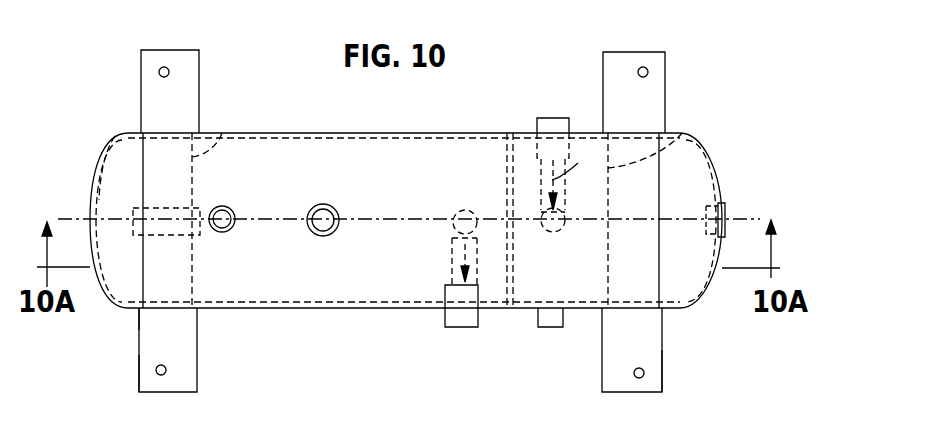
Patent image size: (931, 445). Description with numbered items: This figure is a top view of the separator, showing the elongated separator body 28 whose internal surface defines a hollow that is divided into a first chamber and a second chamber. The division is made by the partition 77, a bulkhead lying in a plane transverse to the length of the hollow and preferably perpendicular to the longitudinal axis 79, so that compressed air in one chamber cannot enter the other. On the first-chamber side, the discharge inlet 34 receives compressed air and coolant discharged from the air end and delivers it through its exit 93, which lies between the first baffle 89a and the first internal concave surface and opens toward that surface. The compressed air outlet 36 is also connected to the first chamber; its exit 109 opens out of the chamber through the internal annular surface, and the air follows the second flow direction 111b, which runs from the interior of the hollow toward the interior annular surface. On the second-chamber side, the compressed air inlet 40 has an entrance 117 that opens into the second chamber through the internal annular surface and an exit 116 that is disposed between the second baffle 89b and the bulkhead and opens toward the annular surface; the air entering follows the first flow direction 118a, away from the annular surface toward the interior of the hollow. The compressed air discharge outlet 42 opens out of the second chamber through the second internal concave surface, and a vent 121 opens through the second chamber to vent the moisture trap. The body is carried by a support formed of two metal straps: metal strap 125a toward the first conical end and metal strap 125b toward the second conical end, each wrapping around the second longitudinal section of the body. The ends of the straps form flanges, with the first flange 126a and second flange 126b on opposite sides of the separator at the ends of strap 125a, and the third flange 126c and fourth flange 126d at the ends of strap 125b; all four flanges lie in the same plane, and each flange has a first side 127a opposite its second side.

The separator body 28 is at (336, 308).
The discharge inlet 34 is at (233, 210).
The compressed air outlet 36 is at (433, 260).
The compressed air inlet 40 is at (535, 172).
The compressed air discharge outlet 42 is at (727, 204).
The partition 77 is at (503, 183).
The longitudinal axis 79 is at (750, 204).
The baffle 89a is at (222, 133).
The baffle 89b is at (682, 133).
The exit 93 is at (108, 131).
The exit 109 is at (472, 328).
The second flow direction 111b is at (475, 258).
The exit 116 is at (562, 235).
The entrance 117 is at (540, 116).
The first flow direction 118a is at (581, 160).
The vent 121 is at (552, 328).
The metal strap 125a is at (133, 325).
The metal strap 125b is at (667, 372).
The first flange 126a is at (173, 394).
The second flange 126b is at (140, 85).
The third flange 126c is at (664, 331).
The fourth flange 126d is at (666, 93).
The first side 127a is at (163, 352).